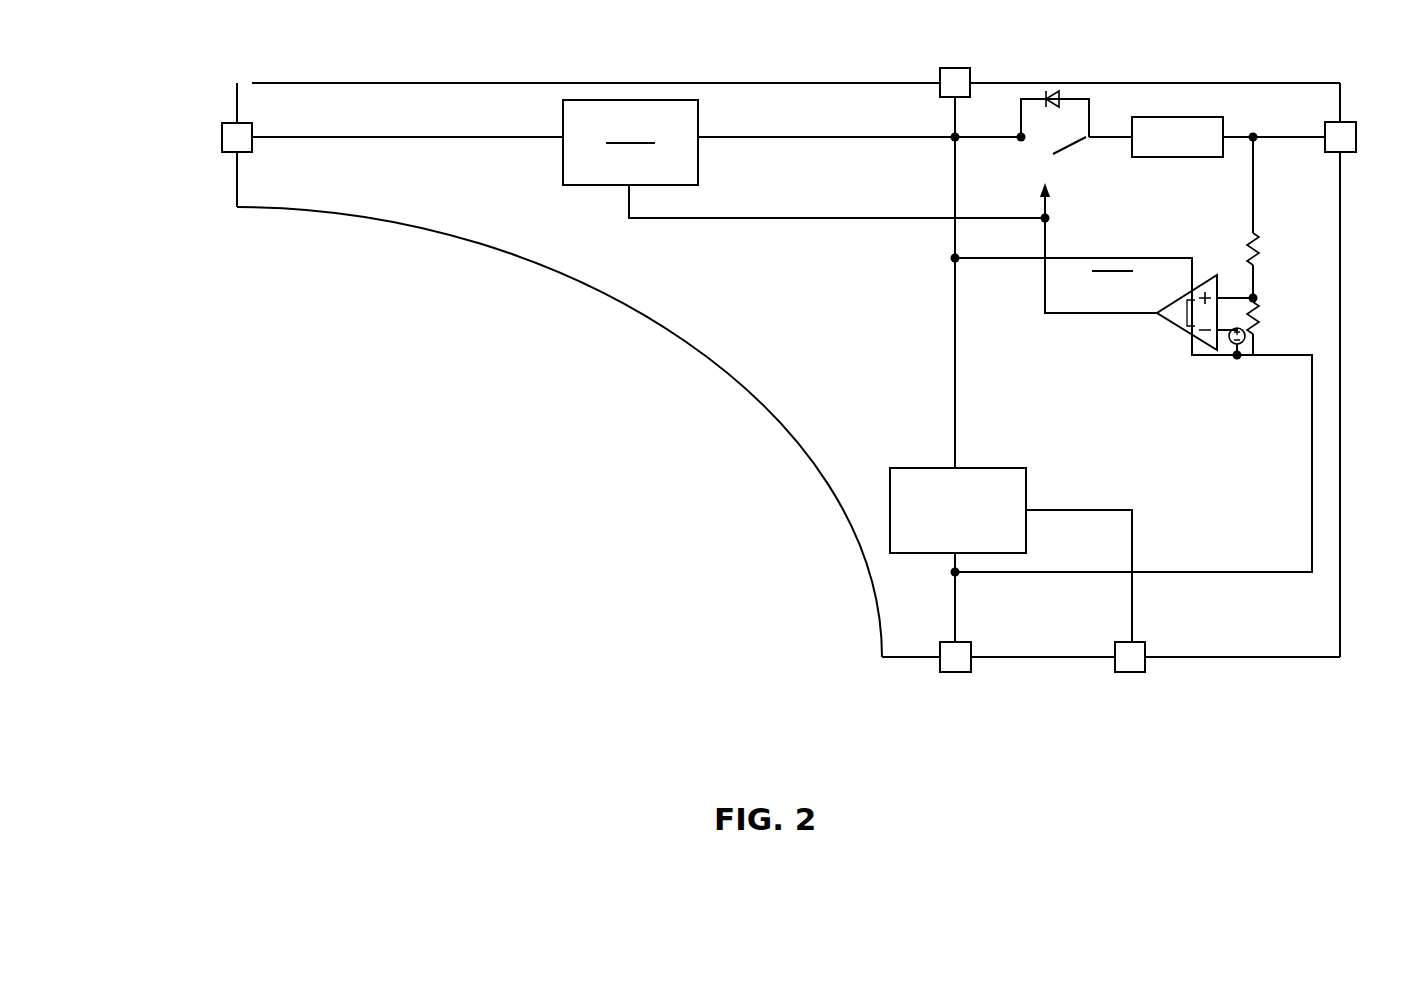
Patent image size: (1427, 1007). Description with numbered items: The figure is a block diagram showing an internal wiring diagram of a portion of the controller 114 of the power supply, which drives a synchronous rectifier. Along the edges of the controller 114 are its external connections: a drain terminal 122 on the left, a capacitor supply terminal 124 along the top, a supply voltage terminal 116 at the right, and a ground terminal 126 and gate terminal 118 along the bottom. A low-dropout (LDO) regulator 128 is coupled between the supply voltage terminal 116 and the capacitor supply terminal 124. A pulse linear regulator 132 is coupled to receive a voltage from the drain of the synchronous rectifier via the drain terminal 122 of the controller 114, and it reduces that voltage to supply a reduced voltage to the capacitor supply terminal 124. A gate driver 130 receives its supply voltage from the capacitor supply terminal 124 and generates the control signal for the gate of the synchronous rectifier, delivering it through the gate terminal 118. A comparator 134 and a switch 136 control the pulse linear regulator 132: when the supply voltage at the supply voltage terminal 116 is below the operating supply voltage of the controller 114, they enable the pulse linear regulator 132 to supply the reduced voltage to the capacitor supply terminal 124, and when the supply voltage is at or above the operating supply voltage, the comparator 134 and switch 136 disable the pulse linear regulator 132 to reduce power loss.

The controller 114 is at (1163, 83).
The supply voltage terminal 116 is at (1343, 122).
The gate terminal 118 is at (1147, 665).
The drain terminal 122 is at (222, 123).
The capacitor supply terminal 124 is at (940, 70).
The ground terminal 126 is at (940, 662).
The low-dropout (LDO) regulator 128 is at (1188, 117).
The gate driver 130 is at (970, 468).
The pulse linear regulator 132 is at (615, 100).
The comparator 134 is at (1170, 330).
The switch 136 is at (1070, 149).